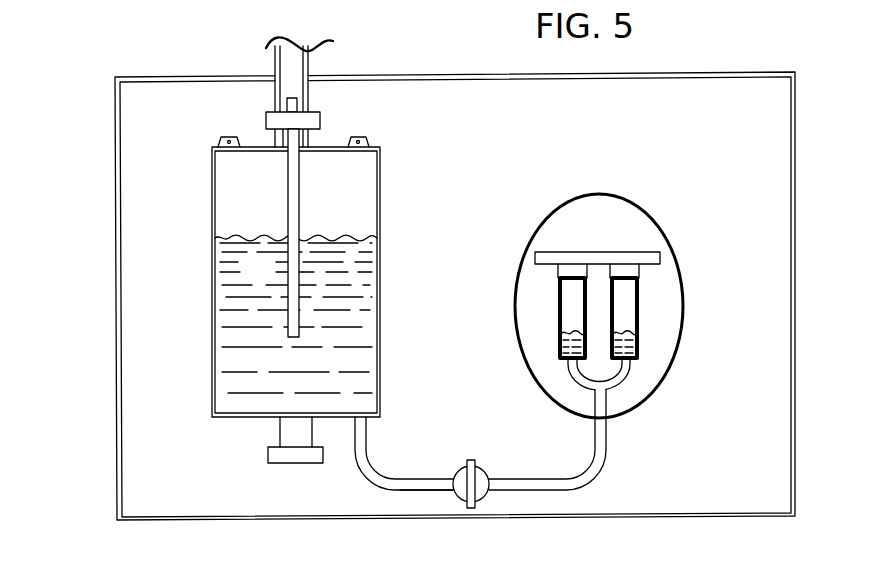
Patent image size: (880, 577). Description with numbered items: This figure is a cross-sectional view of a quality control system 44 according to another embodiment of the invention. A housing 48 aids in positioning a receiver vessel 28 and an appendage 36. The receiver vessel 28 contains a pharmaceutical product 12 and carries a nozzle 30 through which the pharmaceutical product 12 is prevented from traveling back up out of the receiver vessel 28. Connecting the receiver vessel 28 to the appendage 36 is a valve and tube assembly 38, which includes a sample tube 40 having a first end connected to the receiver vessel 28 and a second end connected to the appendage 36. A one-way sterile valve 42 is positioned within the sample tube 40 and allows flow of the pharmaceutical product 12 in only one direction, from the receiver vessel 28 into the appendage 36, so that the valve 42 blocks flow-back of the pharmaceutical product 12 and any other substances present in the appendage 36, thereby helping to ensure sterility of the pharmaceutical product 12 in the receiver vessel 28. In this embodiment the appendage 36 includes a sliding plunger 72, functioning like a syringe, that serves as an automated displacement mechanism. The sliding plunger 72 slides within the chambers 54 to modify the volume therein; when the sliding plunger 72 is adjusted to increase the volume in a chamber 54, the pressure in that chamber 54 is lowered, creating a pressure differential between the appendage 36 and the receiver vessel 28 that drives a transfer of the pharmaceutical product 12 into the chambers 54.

The pharmaceutical product 12 is at (270, 279).
The receiver vessel 28 is at (329, 148).
The nozzle 30 is at (287, 195).
The appendage 36 is at (613, 195).
The valve and tube assembly 38 is at (426, 464).
The sample tube 40 is at (369, 450).
The one-way sterile valve 42 is at (489, 470).
The quality control system 44 is at (760, 63).
The housing 48 is at (116, 375).
The chamber 54 is at (561, 326).
The sliding plunger 72 is at (645, 251).